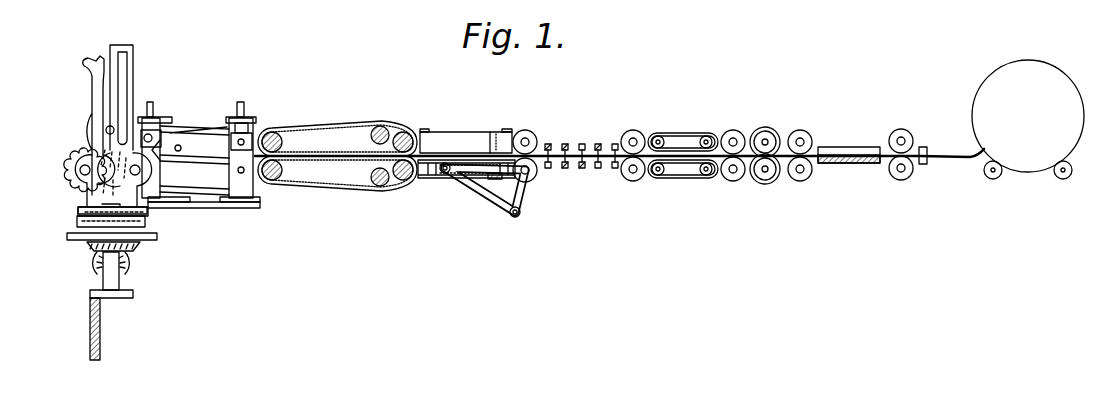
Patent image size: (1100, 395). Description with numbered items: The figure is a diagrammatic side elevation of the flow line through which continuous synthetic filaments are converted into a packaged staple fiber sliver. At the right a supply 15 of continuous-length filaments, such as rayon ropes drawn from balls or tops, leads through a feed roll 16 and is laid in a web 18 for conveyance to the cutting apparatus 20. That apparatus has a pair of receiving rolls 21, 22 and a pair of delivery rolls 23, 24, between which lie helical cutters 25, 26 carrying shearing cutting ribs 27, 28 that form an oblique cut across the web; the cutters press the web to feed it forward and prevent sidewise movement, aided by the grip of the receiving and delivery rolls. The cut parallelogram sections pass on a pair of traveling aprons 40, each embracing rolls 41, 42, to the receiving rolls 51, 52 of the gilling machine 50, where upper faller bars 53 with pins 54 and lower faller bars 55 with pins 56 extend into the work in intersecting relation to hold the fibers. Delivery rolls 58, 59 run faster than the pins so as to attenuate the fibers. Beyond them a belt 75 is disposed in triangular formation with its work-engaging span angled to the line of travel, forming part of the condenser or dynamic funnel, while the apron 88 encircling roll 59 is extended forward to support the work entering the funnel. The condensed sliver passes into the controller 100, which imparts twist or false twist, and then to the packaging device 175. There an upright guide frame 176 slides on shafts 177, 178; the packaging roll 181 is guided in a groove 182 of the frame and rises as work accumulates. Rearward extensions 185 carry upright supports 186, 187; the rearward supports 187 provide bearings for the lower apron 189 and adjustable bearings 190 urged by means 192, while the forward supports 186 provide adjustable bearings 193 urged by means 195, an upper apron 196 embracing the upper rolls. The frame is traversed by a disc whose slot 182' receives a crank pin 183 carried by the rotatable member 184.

The supply 15 is at (975, 104).
The feed roll 16 is at (908, 134).
The web 18 is at (909, 176).
The cutting apparatus 20 is at (774, 148).
The receiving roll 21 is at (808, 136).
The receiving roll 22 is at (809, 178).
The delivery roll 23 is at (733, 130).
The delivery roll 24 is at (735, 181).
The helical cutter 25 is at (774, 134).
The helical cutter 26 is at (772, 177).
The cutting rib 27 is at (763, 132).
The cutting rib 28 is at (768, 206).
The traveling apron 40 is at (686, 133).
The roll 41 is at (707, 136).
The roll 42 is at (658, 136).
The gilling machine 50 is at (581, 148).
The receiving roll 51 is at (634, 130).
The receiving roll 52 is at (631, 181).
The upper faller bar 53 is at (566, 143).
The pin 54 is at (549, 143).
The lower faller bar 55 is at (566, 169).
The pin 56 is at (583, 169).
The delivery roll 58 is at (525, 129).
The delivery roll 59 is at (522, 178).
The belt 75 is at (460, 136).
The apron 88 is at (484, 198).
The controller 100 is at (350, 135).
The packaging device 175 is at (150, 69).
The upright guide frame 176 is at (87, 199).
The shaft 177 is at (76, 172).
The shaft 178 is at (130, 174).
The packaging roll 181 is at (86, 130).
The groove 182 is at (90, 120).
The slot 182' is at (52, 237).
The crank pin 183 is at (138, 238).
The rotatable member 184 is at (76, 242).
The rearward extension 185 is at (214, 209).
The upright support 186 is at (170, 202).
The upright support 187 is at (230, 202).
The lower apron 189 is at (194, 160).
The adjustable bearing 190 is at (265, 125).
The urging means 192 is at (250, 113).
The adjustable bearing 193 is at (165, 128).
The urging means 195 is at (150, 118).
The apron 196 is at (187, 130).